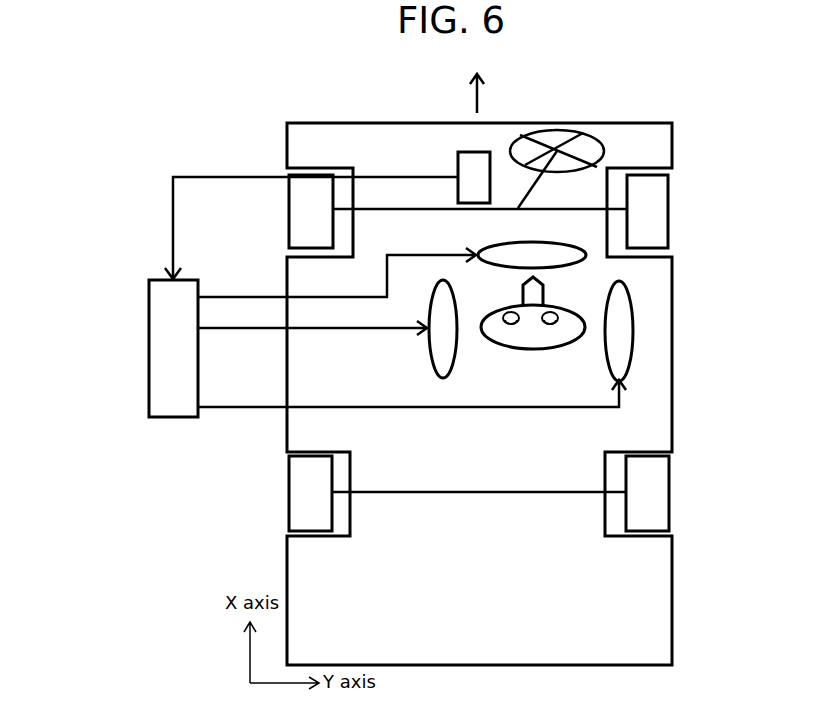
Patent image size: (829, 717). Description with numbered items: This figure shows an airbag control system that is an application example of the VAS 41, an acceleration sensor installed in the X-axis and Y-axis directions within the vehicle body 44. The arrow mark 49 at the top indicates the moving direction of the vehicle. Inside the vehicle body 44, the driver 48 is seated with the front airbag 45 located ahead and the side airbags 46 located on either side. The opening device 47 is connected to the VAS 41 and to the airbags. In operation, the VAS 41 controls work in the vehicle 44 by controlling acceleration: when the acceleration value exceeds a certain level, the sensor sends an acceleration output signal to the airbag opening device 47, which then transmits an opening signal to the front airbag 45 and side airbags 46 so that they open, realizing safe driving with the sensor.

The VAS 41 is at (470, 150).
The vehicle body 44 is at (671, 347).
The front airbag 45 is at (572, 243).
The side airbag 46 is at (455, 355).
The opening device 47 is at (167, 418).
The driver 48 is at (562, 308).
The arrow mark 49 is at (478, 99).